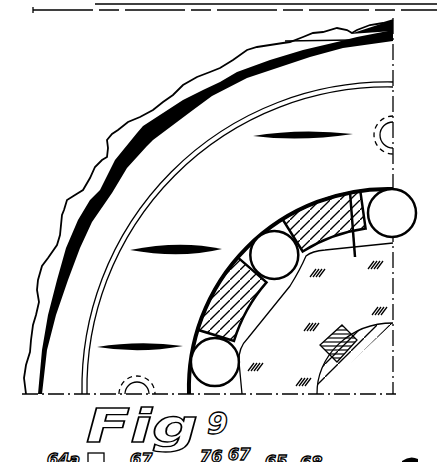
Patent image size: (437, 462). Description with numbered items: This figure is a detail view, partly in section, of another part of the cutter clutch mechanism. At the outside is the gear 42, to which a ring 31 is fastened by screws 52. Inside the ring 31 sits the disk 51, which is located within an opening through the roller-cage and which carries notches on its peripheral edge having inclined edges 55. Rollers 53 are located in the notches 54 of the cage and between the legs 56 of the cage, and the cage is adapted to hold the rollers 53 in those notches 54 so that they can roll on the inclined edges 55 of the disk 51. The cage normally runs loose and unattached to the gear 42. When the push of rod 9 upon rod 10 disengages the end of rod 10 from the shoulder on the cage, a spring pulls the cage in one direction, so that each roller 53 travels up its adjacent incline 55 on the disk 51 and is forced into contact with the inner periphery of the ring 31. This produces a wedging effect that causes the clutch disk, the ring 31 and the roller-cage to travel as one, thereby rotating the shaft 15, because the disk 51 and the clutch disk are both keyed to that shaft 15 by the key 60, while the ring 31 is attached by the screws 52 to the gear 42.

The rod 9 is at (147, 33).
The rod 10 is at (53, 15).
The shaft 15 is at (340, 386).
The ring 31 is at (237, 238).
The gear 42 is at (107, 157).
The disk 51 is at (361, 160).
The screws 52 is at (389, 130).
The rollers 53 is at (262, 245).
The notches 54 is at (272, 233).
The inclined edges 55 is at (335, 250).
The legs 56 is at (320, 198).
The key 60 is at (340, 326).